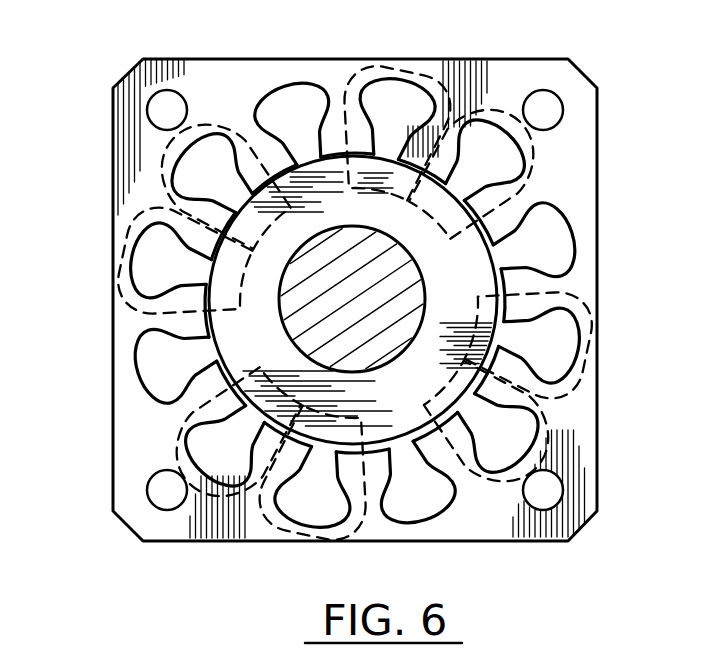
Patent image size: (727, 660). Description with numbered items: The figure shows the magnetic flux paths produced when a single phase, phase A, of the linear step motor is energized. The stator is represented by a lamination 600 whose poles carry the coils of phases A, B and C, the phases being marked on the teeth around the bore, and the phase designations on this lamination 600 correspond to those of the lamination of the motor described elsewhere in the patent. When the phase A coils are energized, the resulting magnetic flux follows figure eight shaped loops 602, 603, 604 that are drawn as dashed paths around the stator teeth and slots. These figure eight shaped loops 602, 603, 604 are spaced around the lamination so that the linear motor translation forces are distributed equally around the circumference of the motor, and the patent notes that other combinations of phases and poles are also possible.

The lamination 600 is at (598, 466).
The figure eight shaped loop 602 is at (403, 66).
The figure eight shaped loop 603 is at (584, 362).
The figure eight shaped loop 604 is at (342, 541).